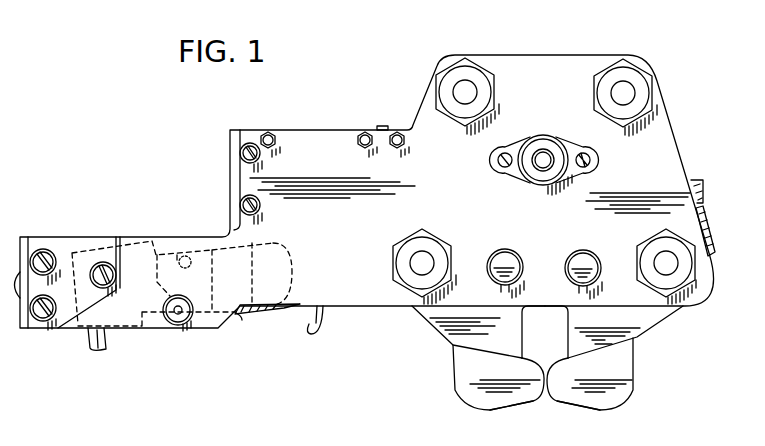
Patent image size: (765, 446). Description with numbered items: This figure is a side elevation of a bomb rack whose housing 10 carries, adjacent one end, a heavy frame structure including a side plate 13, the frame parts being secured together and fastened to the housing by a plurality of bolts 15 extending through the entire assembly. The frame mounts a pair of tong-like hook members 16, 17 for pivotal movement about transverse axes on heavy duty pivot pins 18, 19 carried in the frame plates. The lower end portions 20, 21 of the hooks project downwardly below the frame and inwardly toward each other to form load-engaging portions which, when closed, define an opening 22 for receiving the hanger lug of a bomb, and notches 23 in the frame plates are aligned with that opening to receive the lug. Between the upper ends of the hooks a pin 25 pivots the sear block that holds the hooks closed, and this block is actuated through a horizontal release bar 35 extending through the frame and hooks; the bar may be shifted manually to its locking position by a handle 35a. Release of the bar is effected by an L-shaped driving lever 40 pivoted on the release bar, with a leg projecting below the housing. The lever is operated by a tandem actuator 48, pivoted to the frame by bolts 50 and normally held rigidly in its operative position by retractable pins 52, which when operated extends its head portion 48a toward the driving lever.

The housing 10 is at (304, 148).
The side plate 13 is at (652, 332).
The bolts 15 is at (470, 72).
The hook member 16 is at (462, 365).
The hook member 17 is at (622, 370).
The pivot pin 18 is at (504, 262).
The pivot pin 19 is at (586, 262).
The lower end portion 20 is at (528, 392).
The lower end portion 21 is at (570, 395).
The opening 22 is at (538, 334).
The notches 23 is at (560, 322).
The pin 25 is at (545, 157).
The release bar 35 is at (697, 184).
The handle 35a is at (709, 240).
The driving lever 40 is at (318, 320).
The actuator 48 is at (140, 330).
The head portion 48a is at (240, 318).
The bolts 50 is at (100, 262).
The retractable pins 52 is at (180, 322).